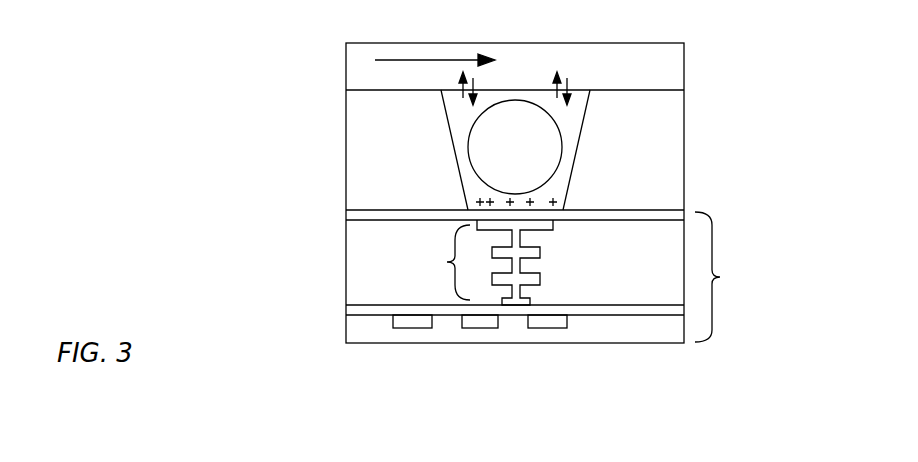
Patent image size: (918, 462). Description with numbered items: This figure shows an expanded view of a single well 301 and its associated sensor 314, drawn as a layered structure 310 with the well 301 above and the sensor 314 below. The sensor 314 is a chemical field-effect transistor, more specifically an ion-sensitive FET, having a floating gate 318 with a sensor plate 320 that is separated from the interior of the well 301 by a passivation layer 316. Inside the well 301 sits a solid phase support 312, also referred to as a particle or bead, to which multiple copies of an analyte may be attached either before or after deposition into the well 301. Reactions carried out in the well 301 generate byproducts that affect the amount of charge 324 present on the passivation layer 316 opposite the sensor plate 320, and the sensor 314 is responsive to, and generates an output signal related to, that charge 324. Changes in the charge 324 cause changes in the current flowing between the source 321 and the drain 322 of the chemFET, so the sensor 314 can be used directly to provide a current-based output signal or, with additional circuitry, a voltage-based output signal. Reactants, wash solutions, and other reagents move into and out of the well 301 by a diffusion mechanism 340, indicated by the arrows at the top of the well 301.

The well 301 is at (445, 117).
The fluidic device housing 310 is at (684, 150).
The solid phase support 312 is at (477, 155).
The charge 324 is at (465, 203).
The diffusion mechanism 340 is at (567, 84).
The passivation layer 316 is at (346, 213).
The floating gate 318 is at (417, 262).
The sensor plate 320 is at (548, 227).
The sensor 314 is at (600, 277).
The drain 322 is at (478, 328).
The source 321 is at (552, 328).